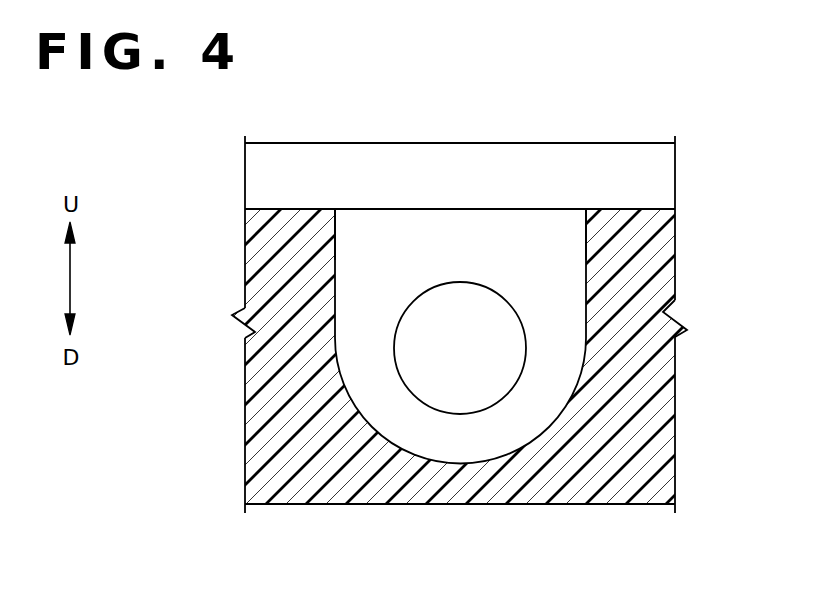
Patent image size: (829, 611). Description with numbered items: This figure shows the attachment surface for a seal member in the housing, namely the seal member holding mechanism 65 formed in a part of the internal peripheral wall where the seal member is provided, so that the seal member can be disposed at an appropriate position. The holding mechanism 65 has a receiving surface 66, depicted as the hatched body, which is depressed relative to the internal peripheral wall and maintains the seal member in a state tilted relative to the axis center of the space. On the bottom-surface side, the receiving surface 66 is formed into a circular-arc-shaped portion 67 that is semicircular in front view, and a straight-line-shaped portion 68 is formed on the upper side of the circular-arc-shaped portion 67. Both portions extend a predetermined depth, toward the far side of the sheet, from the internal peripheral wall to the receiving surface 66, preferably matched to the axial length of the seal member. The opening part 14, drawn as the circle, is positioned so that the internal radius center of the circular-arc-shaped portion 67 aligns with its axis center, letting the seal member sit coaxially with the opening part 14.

The opening part 14 is at (503, 358).
The seal member holding mechanism 65 is at (460, 550).
The receiving surface 66 is at (532, 412).
The circular-arc-shaped portion 67 is at (402, 448).
The straight-line-shaped portion 68 is at (336, 248).